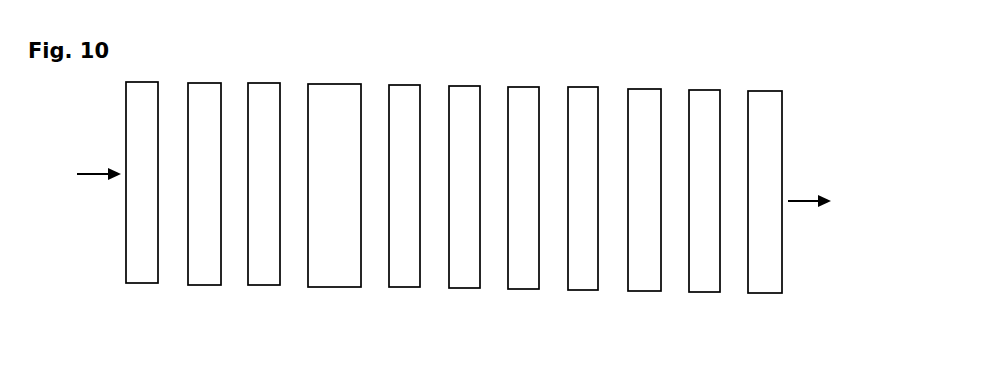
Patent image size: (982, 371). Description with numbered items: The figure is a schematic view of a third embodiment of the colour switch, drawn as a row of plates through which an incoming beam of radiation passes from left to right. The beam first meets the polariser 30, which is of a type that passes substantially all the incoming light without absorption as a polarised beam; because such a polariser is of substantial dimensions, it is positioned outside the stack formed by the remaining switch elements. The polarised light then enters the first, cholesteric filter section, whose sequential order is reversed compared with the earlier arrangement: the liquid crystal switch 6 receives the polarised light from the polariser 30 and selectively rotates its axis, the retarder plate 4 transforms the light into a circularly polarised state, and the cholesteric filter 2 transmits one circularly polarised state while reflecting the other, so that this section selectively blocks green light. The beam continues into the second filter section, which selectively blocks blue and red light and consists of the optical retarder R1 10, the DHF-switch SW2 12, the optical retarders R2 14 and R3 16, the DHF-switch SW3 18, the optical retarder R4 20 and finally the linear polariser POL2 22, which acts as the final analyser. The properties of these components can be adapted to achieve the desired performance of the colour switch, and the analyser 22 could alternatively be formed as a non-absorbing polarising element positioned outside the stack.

The polariser 30 is at (143, 213).
The liquid crystal switch 6 is at (208, 213).
The retarder plate 4 is at (266, 213).
The cholesteric filter 2 is at (335, 219).
The optical retarder R1 10 is at (404, 214).
The DHF-switch SW2 12 is at (462, 218).
The optical retarder R2 14 is at (523, 219).
The optical retarder R3 16 is at (583, 219).
The DHF-switch SW3 18 is at (640, 220).
The optical retarder R4 20 is at (704, 221).
The linear polariser POL2 22 is at (768, 221).